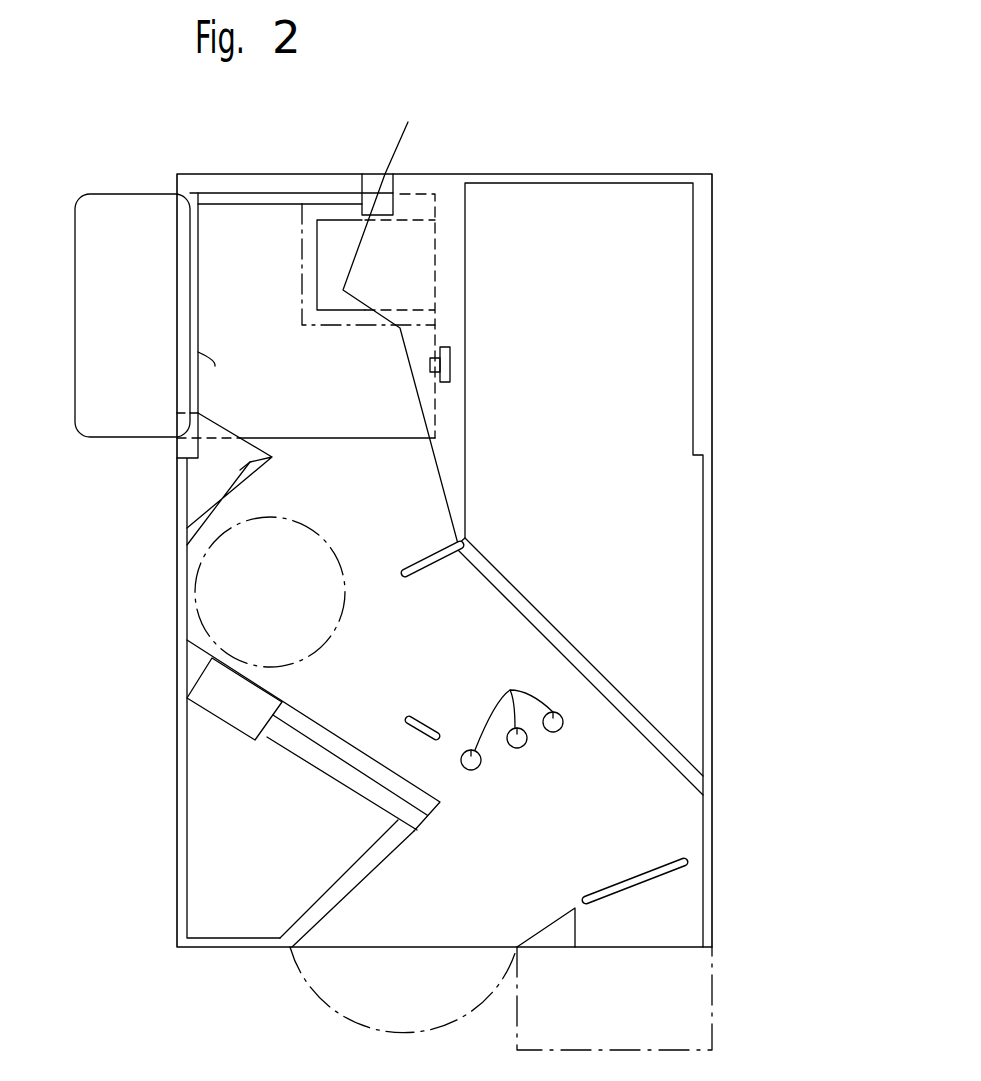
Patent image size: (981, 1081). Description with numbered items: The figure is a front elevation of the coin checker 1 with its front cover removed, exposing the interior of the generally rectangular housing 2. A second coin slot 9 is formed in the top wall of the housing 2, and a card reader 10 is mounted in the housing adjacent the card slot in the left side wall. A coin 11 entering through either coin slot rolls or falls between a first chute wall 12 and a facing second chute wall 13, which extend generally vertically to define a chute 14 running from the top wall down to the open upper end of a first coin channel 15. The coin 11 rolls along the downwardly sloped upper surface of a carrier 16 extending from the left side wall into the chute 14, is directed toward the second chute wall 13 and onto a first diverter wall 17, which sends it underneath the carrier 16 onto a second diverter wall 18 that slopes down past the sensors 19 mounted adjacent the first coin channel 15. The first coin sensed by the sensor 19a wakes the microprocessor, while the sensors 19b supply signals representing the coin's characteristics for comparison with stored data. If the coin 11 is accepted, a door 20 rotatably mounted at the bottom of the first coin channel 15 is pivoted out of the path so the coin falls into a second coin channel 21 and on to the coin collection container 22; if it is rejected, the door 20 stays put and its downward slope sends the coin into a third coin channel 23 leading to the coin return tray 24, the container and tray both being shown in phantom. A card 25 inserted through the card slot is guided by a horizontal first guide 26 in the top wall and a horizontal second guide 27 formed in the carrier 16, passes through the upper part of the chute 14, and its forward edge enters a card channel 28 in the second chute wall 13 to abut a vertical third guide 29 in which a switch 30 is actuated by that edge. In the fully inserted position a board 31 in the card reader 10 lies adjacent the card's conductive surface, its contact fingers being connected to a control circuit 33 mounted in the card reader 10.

The coin checker 1 is at (727, 243).
The housing 2 is at (178, 848).
The second coin slot 9 is at (400, 318).
The card reader 10 is at (300, 248).
The coin 11 is at (257, 568).
The first chute wall 12 is at (198, 352).
The second chute wall 13 is at (363, 298).
The chute 14 is at (222, 275).
The first coin channel 15 is at (337, 688).
The carrier 16 is at (252, 468).
The first diverter wall 17 is at (430, 567).
The second diverter wall 18 is at (238, 697).
The sensors 19 is at (510, 690).
The sensor 19a is at (410, 713).
The sensors 19b is at (592, 757).
The door 20 is at (652, 870).
The second coin channel 21 is at (647, 902).
The coin collection container 22 is at (620, 1012).
The third coin channel 23 is at (427, 905).
The coin return tray 24 is at (377, 973).
The card 25 is at (88, 263).
The first guide 26 is at (212, 195).
The second guide 27 is at (218, 442).
The card channel 28 is at (422, 292).
The third guide 29 is at (433, 438).
The switch 30 is at (452, 365).
The board 31 is at (412, 247).
The control circuit 33 is at (342, 215).